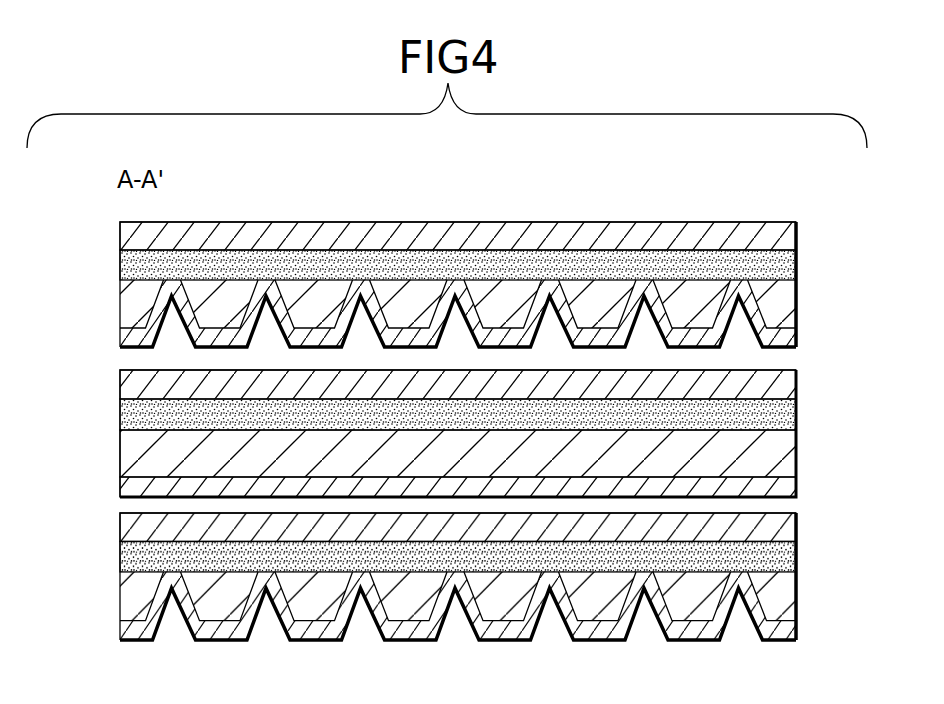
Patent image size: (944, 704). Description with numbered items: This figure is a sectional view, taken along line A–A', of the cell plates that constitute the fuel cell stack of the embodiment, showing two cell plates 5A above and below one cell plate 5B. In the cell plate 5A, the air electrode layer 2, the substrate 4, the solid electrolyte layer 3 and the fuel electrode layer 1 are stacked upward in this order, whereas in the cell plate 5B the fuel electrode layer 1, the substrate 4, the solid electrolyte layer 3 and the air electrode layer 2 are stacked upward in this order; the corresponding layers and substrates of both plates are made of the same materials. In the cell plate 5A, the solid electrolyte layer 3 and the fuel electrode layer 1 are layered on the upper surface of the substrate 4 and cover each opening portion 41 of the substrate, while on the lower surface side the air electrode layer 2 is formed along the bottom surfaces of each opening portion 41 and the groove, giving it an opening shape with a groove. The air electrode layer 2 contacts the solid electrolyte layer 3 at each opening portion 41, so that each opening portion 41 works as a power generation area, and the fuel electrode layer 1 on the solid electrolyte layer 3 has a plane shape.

The fuel electrode layer 1 is at (784, 233).
The air electrode layer 2 is at (784, 333).
The solid electrolyte layer 3 is at (787, 264).
The substrate 4 is at (787, 303).
The opening portion 41 is at (547, 290).
The cell plate 5A is at (100, 222).
The cell plate 5B is at (100, 370).